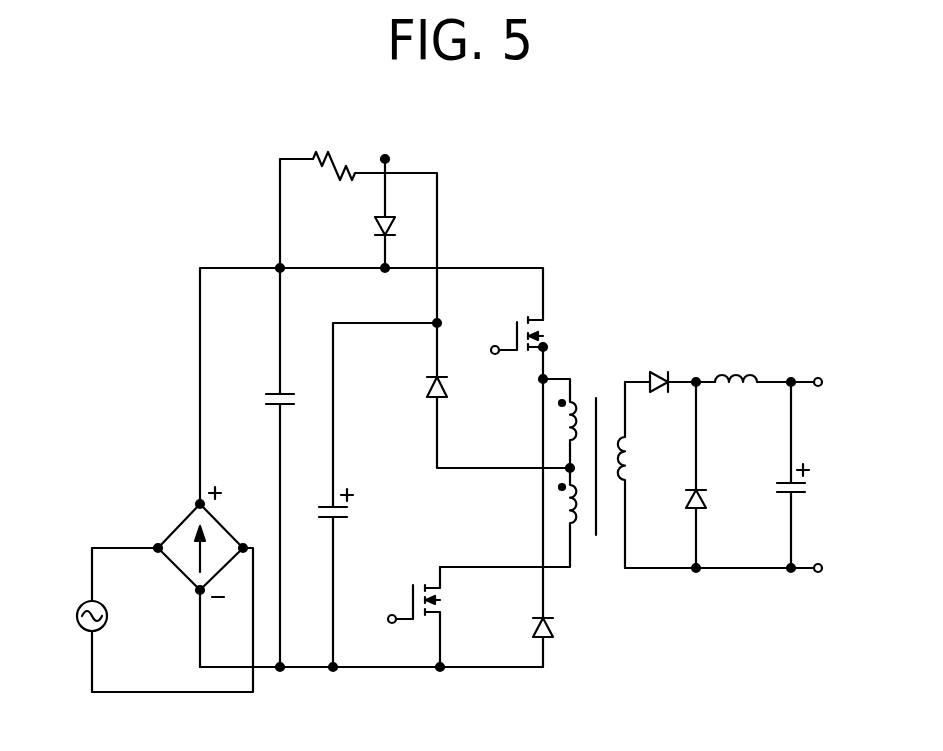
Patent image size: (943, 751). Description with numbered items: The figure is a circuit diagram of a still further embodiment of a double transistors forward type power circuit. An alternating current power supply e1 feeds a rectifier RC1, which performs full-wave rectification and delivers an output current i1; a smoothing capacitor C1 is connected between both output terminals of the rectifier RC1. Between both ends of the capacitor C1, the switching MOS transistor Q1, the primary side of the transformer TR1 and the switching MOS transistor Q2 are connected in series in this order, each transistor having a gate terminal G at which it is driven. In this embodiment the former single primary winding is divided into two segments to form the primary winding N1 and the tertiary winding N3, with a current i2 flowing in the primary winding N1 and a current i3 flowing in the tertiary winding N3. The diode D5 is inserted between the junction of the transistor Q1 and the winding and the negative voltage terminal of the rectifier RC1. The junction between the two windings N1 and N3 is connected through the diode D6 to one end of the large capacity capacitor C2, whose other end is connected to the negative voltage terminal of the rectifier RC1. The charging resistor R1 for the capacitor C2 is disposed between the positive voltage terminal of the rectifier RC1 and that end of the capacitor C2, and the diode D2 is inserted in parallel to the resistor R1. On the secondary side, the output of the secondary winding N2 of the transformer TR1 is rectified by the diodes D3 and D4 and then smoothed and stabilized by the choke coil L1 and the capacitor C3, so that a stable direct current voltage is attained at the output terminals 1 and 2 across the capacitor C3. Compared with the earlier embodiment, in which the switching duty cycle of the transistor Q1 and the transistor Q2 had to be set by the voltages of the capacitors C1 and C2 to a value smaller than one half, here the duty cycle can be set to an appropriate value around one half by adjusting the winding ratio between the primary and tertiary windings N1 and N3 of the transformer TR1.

The charging resistor R1 is at (358, 226).
The diode D2 is at (366, 213).
The output current of the rectifier i1 is at (241, 255).
The smoothing capacitor C1 is at (266, 467).
The large capacity capacitor C2 is at (380, 493).
The diode D6 is at (482, 397).
The current in the tertiary winding i3 is at (419, 411).
The switching MOS transistor Q1 is at (536, 461).
The gate terminal G is at (429, 485).
The transformer TR1 is at (553, 457).
The tertiary winding N3 is at (541, 423).
The primary winding N1 is at (508, 517).
The transformer secondary winding N2 is at (642, 475).
The current of the primary winding i2 is at (495, 547).
The switching MOS transistor Q2 is at (412, 614).
The diode D5 is at (563, 642).
The diode D3 is at (670, 365).
The choke coil L1 is at (757, 366).
The diode D4 is at (716, 477).
The capacitor C3 is at (802, 477).
The end of the capacitor C3 1 is at (829, 383).
The output terminal 2 is at (829, 570).
The rectifier RC1 is at (172, 589).
The alternating current power supply e1 is at (76, 616).